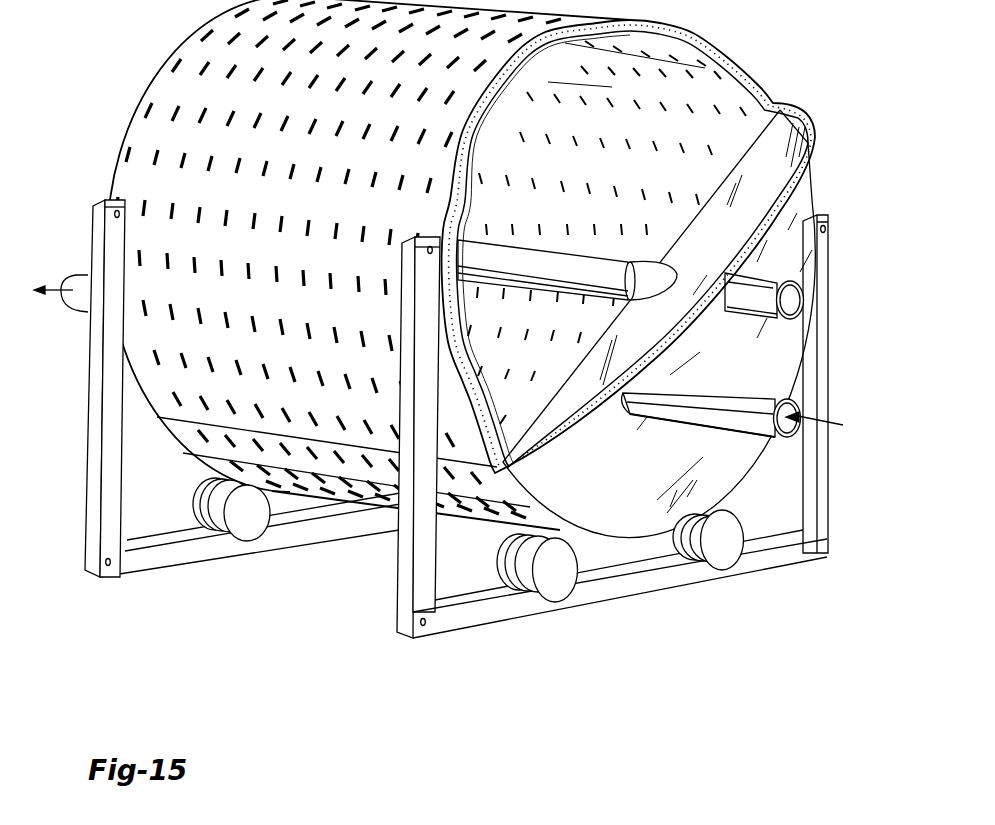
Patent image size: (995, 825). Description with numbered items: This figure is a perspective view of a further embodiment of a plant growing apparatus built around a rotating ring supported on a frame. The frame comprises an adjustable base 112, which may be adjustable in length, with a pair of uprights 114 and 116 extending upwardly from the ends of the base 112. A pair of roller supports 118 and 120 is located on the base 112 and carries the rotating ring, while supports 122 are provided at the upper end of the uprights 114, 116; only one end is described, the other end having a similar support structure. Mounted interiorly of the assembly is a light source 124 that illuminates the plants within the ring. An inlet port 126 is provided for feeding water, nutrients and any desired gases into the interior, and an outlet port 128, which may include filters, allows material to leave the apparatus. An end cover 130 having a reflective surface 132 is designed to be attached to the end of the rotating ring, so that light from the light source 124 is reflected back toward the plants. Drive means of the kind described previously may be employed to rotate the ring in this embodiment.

The adjustable base 112 is at (642, 587).
The upright 114 is at (425, 577).
The upright 116 is at (817, 513).
The roller support 118 is at (555, 578).
The roller support 120 is at (723, 556).
The support 122 is at (442, 236).
The light source 124 is at (601, 266).
The inlet port 126 is at (773, 398).
The outlet port 128 is at (73, 273).
The end cover 130 is at (752, 353).
The reflective surface 132 is at (800, 107).